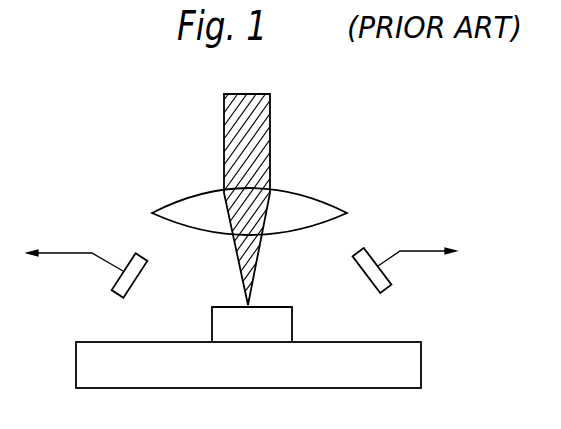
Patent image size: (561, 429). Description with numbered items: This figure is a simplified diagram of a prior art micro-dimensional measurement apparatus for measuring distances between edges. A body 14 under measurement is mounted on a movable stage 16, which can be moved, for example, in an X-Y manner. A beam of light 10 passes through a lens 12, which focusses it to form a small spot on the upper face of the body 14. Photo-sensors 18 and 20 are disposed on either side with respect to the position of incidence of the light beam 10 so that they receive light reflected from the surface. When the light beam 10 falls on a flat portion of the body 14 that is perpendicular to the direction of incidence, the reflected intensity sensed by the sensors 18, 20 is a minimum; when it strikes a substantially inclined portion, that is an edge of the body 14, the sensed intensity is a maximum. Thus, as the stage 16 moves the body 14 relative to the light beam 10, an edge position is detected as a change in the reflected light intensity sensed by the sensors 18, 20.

The beam of light 10 is at (271, 108).
The lens 12 is at (303, 196).
The body 14 is at (293, 323).
The movable stage 16 is at (422, 372).
The photo-sensor 18 is at (112, 289).
The photo-sensor 20 is at (388, 289).